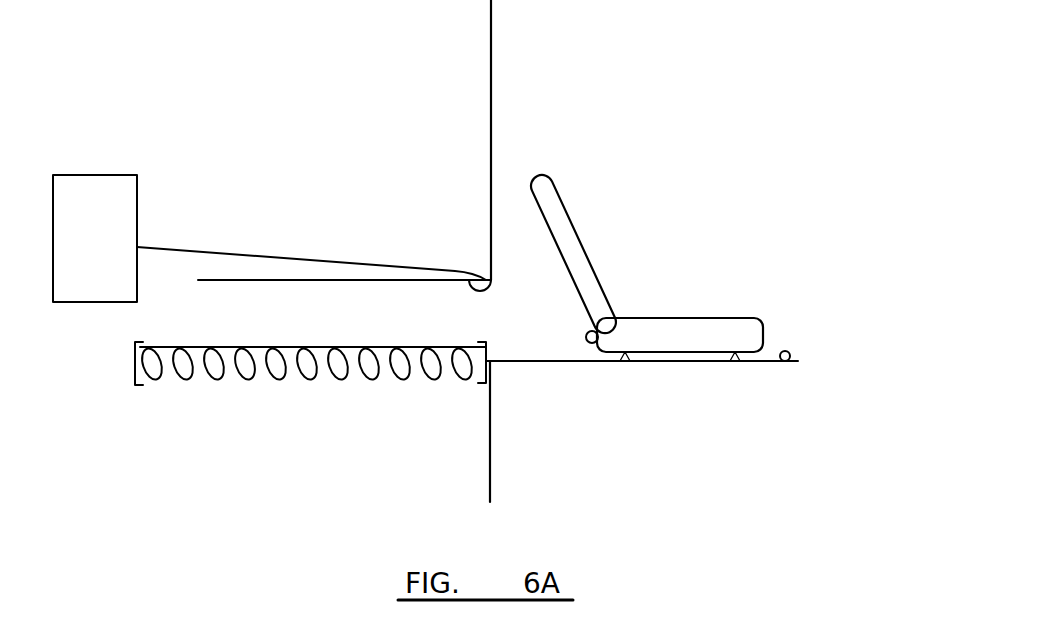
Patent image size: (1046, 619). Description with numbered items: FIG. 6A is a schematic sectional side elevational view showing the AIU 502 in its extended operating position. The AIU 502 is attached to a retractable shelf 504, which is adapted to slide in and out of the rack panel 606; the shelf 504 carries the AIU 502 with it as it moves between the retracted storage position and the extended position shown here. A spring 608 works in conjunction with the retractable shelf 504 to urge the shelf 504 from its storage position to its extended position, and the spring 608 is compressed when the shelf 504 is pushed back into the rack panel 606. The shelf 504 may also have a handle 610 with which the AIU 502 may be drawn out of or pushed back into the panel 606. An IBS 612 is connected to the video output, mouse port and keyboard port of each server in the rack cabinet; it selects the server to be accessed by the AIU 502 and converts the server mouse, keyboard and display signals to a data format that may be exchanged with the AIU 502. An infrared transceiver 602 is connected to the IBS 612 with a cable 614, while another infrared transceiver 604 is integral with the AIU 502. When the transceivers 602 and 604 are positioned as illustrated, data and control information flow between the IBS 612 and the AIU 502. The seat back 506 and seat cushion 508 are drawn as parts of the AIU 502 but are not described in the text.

The AIU 502 is at (726, 313).
The retractable shelf 504 is at (602, 362).
The seat back 506 is at (562, 200).
The seat cushion 508 is at (700, 317).
The infrared transceiver 602 is at (486, 304).
The infrared transceiver 604 is at (586, 331).
The rack panel 606 is at (491, 38).
The spring 608 is at (368, 378).
The handle 610 is at (782, 362).
The IBS 612 is at (95, 175).
The cable 614 is at (267, 250).